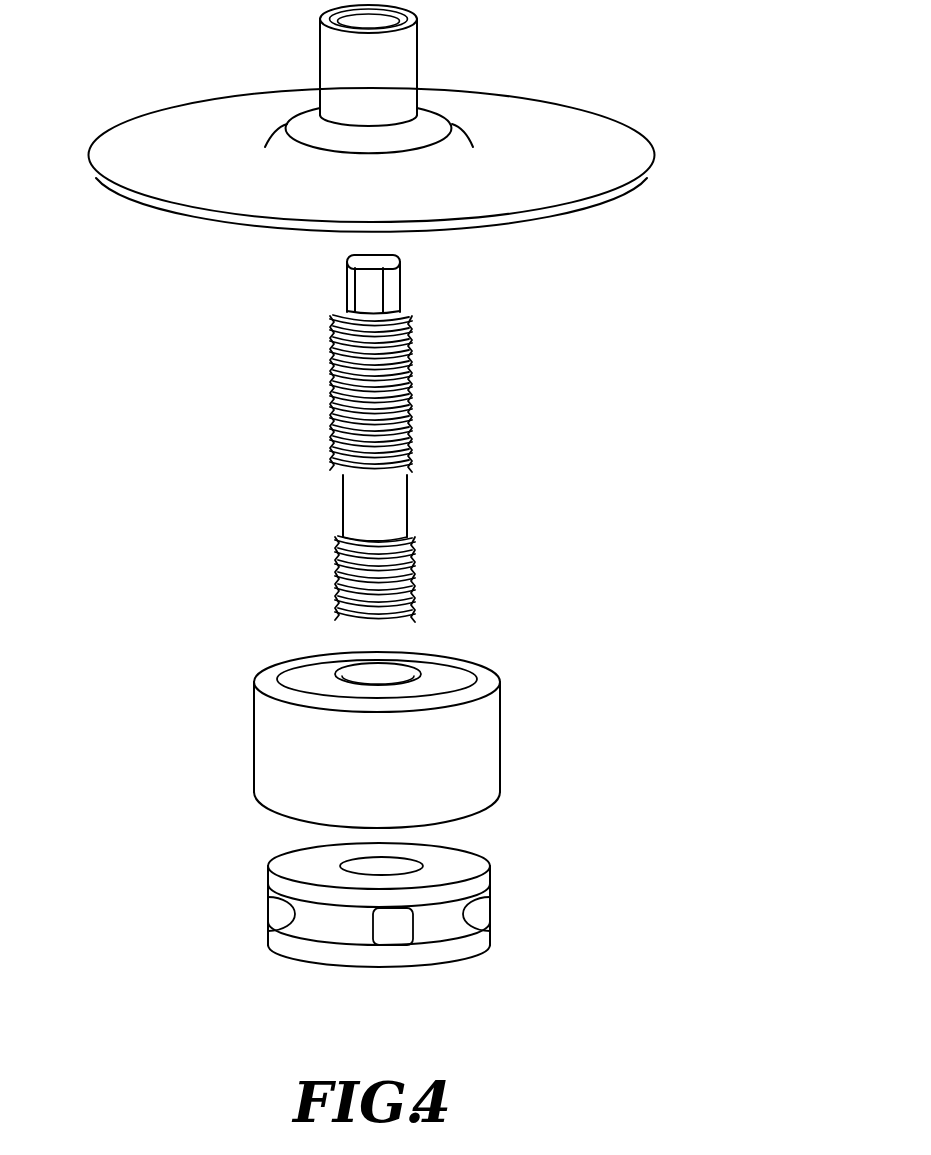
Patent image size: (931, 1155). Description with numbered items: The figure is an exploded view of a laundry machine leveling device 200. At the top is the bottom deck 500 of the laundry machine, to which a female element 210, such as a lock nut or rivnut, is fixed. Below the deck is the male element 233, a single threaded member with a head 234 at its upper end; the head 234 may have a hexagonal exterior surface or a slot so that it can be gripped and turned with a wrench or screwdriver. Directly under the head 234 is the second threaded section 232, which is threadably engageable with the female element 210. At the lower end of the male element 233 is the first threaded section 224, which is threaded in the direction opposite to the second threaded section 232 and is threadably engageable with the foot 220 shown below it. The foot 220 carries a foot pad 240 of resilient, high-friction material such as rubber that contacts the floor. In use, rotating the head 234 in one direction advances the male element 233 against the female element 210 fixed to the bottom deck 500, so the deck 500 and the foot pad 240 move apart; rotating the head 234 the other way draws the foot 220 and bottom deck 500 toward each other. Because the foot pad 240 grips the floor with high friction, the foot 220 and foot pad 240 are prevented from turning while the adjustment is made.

The laundry machine leveling device 200 is at (127, 404).
The bottom deck 500 is at (613, 150).
The female element 210 is at (402, 55).
The head 234 is at (392, 289).
The second threaded section 232 is at (412, 366).
The male element 233 is at (388, 505).
The first threaded section 224 is at (412, 565).
The foot 220 is at (473, 755).
The foot pad 240 is at (490, 878).